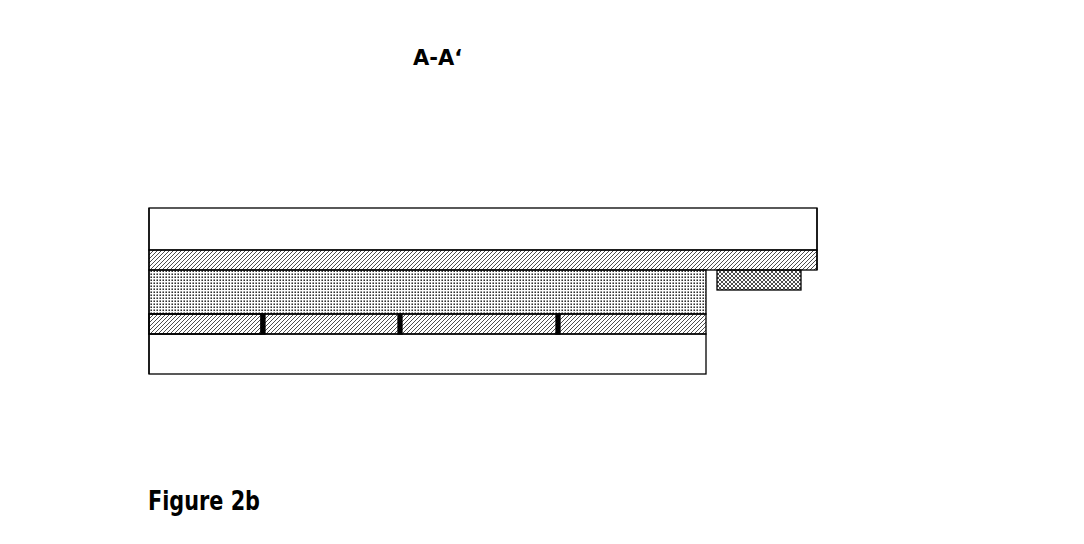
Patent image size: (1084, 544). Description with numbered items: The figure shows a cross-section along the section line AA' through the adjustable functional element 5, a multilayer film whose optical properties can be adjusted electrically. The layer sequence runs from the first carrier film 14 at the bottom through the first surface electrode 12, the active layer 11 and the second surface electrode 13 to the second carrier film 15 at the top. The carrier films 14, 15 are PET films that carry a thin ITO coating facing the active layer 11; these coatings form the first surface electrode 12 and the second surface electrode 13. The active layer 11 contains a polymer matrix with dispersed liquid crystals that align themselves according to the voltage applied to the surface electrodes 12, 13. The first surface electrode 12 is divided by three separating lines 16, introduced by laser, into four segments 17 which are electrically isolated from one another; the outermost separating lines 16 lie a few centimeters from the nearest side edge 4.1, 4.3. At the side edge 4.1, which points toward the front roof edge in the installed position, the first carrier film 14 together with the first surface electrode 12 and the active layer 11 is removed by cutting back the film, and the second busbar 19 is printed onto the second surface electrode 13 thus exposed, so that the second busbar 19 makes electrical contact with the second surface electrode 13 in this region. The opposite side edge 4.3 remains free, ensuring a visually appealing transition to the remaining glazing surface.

The functional element 5 is at (603, 182).
The side edge 4.1 is at (828, 227).
The side edge 4.3 is at (138, 224).
The active layer 11 is at (443, 290).
The first surface electrode 12 is at (508, 323).
The second surface electrode 13 is at (478, 262).
The first carrier film 14 is at (603, 350).
The second carrier film 15 is at (521, 232).
The separating lines 16 is at (268, 328).
The segments 17 is at (207, 323).
The second busbar 19 is at (782, 288).